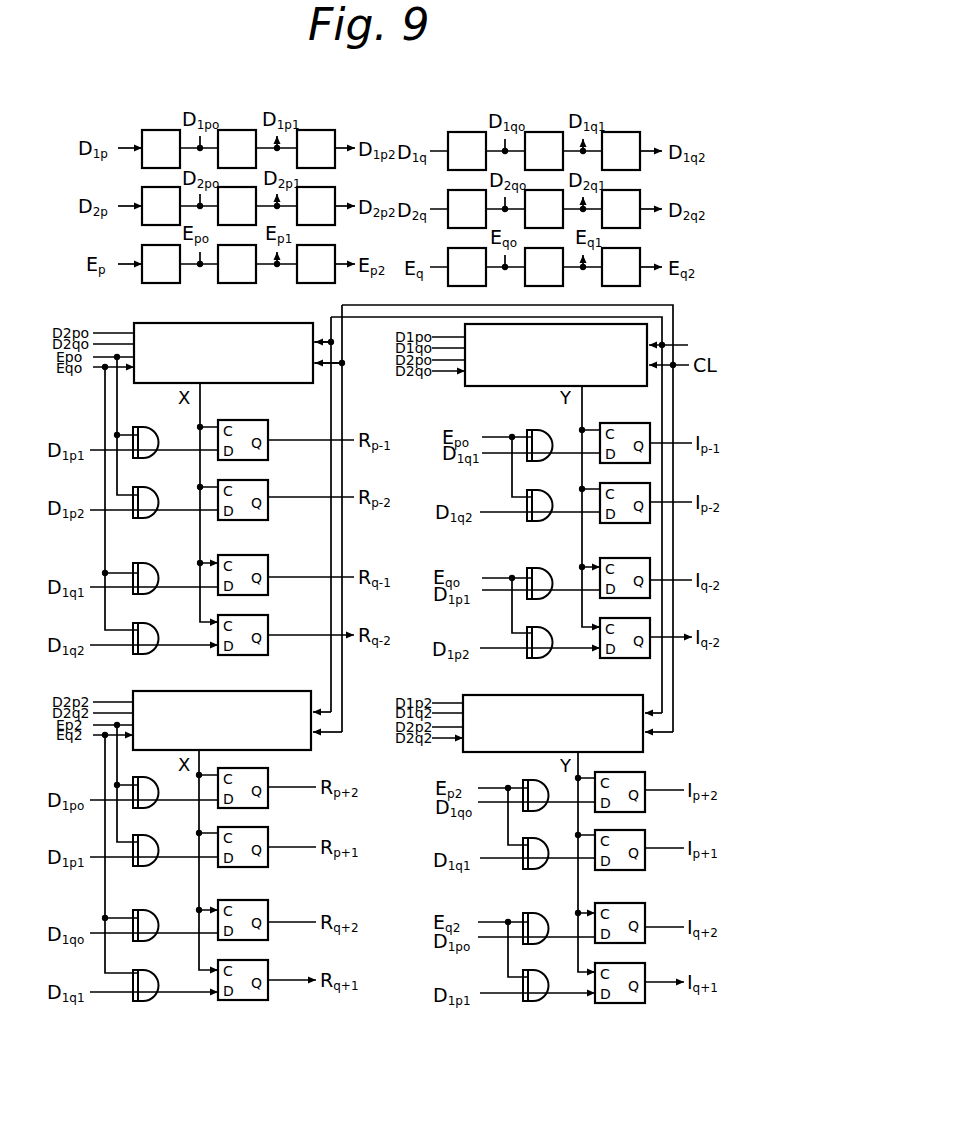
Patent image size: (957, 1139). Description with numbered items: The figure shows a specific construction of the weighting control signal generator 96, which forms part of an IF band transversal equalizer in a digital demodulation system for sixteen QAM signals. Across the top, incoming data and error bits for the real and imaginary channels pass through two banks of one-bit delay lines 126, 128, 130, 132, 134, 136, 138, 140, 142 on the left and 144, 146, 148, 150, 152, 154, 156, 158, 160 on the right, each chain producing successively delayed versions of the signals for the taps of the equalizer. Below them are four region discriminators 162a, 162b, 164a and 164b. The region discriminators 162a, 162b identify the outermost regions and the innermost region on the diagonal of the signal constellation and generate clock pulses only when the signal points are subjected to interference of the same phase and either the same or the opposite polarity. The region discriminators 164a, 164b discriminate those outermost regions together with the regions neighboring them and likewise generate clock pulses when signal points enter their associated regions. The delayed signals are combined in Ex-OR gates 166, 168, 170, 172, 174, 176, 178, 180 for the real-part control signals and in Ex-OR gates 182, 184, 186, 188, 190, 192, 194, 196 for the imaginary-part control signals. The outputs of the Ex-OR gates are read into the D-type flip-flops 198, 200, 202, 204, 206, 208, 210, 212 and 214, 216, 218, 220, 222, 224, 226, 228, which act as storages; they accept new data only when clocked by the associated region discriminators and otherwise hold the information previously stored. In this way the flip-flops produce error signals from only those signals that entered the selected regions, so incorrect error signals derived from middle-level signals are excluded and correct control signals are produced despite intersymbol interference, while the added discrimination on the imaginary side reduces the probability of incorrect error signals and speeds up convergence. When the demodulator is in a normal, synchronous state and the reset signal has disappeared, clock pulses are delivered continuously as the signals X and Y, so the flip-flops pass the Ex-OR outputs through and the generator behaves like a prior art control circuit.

The weighting control signal generator 96 is at (662, 97).
The 1-bit delay line 126 is at (159, 130).
The 1-bit delay line 128 is at (240, 130).
The 1-bit delay line 130 is at (318, 130).
The 1-bit delay line 132 is at (150, 187).
The 1-bit delay line 134 is at (250, 226).
The 1-bit delay line 136 is at (320, 187).
The 1-bit delay line 138 is at (154, 283).
The 1-bit delay line 140 is at (233, 283).
The 1-bit delay line 142 is at (316, 283).
The 1-bit delay line 144 is at (470, 132).
The 1-bit delay line 146 is at (551, 132).
The 1-bit delay line 148 is at (623, 132).
The 1-bit delay line 150 is at (457, 190).
The 1-bit delay line 152 is at (553, 229).
The 1-bit delay line 154 is at (630, 190).
The 1-bit delay line 156 is at (457, 248).
The 1-bit delay line 158 is at (540, 287).
The 1-bit delay line 160 is at (630, 248).
The region discriminator 162a is at (184, 323).
The region discriminator 162b is at (191, 691).
The region discriminator 164a is at (510, 386).
The region discriminator 164b is at (572, 695).
The Ex-OR gate 166 is at (170, 428).
The Ex-OR gate 168 is at (167, 487).
The Ex-OR gate 170 is at (167, 555).
The Ex-OR gate 172 is at (167, 615).
The Ex-OR gate 174 is at (175, 786).
The Ex-OR gate 176 is at (170, 840).
The Ex-OR gate 178 is at (170, 910).
The Ex-OR gate 180 is at (170, 968).
The Ex-OR gate 182 is at (560, 432).
The Ex-OR gate 184 is at (560, 487).
The Ex-OR gate 186 is at (560, 567).
The Ex-OR gate 188 is at (560, 627).
The Ex-OR gate 190 is at (553, 783).
The Ex-OR gate 192 is at (555, 834).
The Ex-OR gate 194 is at (549, 921).
The Ex-OR gate 196 is at (555, 968).
The D-type flip-flop 198 is at (250, 420).
The D-type flip-flop 200 is at (261, 480).
The D-type flip-flop 202 is at (257, 555).
The D-type flip-flop 204 is at (257, 615).
The D-type flip-flop 206 is at (257, 768).
The D-type flip-flop 208 is at (257, 827).
The D-type flip-flop 210 is at (255, 900).
The D-type flip-flop 212 is at (252, 960).
The D-type flip-flop 214 is at (630, 423).
The D-type flip-flop 216 is at (637, 483).
The D-type flip-flop 218 is at (633, 558).
The D-type flip-flop 220 is at (637, 618).
The D-type flip-flop 222 is at (627, 772).
The D-type flip-flop 224 is at (627, 830).
The D-type flip-flop 226 is at (622, 903).
The D-type flip-flop 228 is at (627, 963).